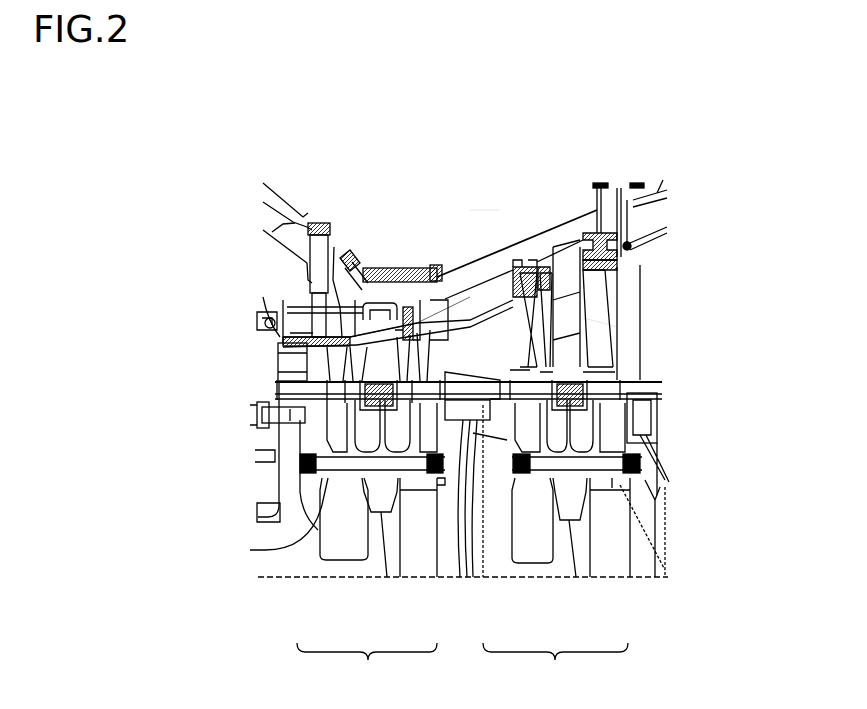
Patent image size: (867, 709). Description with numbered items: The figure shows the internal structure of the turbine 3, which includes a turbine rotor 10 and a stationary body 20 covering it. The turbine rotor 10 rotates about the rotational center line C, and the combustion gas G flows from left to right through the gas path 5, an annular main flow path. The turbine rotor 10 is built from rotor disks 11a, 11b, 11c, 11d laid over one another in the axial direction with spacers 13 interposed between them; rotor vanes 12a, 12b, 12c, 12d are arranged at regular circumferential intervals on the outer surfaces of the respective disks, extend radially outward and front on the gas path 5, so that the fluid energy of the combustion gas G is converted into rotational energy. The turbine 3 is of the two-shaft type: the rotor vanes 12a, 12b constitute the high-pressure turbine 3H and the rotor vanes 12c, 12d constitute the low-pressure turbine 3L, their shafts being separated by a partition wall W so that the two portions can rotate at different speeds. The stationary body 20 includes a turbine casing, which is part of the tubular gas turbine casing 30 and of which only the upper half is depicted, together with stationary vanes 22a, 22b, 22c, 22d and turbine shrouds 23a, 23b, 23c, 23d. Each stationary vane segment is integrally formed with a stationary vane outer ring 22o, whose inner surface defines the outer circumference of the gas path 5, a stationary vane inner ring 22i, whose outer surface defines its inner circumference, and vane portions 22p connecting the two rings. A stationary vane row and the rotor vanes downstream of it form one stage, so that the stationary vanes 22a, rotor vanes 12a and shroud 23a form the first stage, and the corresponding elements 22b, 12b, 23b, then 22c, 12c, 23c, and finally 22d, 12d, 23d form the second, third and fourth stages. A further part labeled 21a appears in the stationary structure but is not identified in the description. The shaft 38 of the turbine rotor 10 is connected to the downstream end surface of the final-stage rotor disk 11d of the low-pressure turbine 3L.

The turbine 3 is at (495, 172).
The high-pressure turbine 3H is at (367, 671).
The low-pressure turbine 3L is at (555, 671).
The gas path 5 is at (292, 362).
The turbine rotor 10 is at (660, 458).
The rotor disk 11a is at (345, 578).
The rotor disk 11b is at (428, 578).
The rotor disk 11c is at (538, 578).
The rotor disk 11d is at (617, 578).
The rotor vanes 12a is at (328, 337).
The rotor vanes 12b is at (410, 305).
The rotor vanes 12c is at (546, 273).
The rotor vanes 12d is at (617, 309).
The spacers 13 is at (577, 580).
The stationary body 20 is at (476, 270).
The shroud ring 21a is at (492, 383).
The stationary vanes 22a is at (313, 347).
The stationary vanes 22b is at (387, 302).
The stationary vanes 22c is at (490, 578).
The stationary vanes 22d is at (560, 247).
The stationary vane inner ring 22i is at (590, 368).
The stationary vane outer ring 22o is at (585, 262).
The vane portions 22p is at (583, 318).
The turbine shroud 23a is at (351, 258).
The turbine shroud 23b is at (413, 300).
The turbine shroud 23c is at (521, 270).
The turbine shroud 23d is at (613, 277).
The gas turbine casing 30 is at (490, 262).
The shaft 38 is at (658, 510).
The rotational center line C is at (278, 586).
The combustion gas G is at (270, 360).
The partition wall W is at (476, 519).